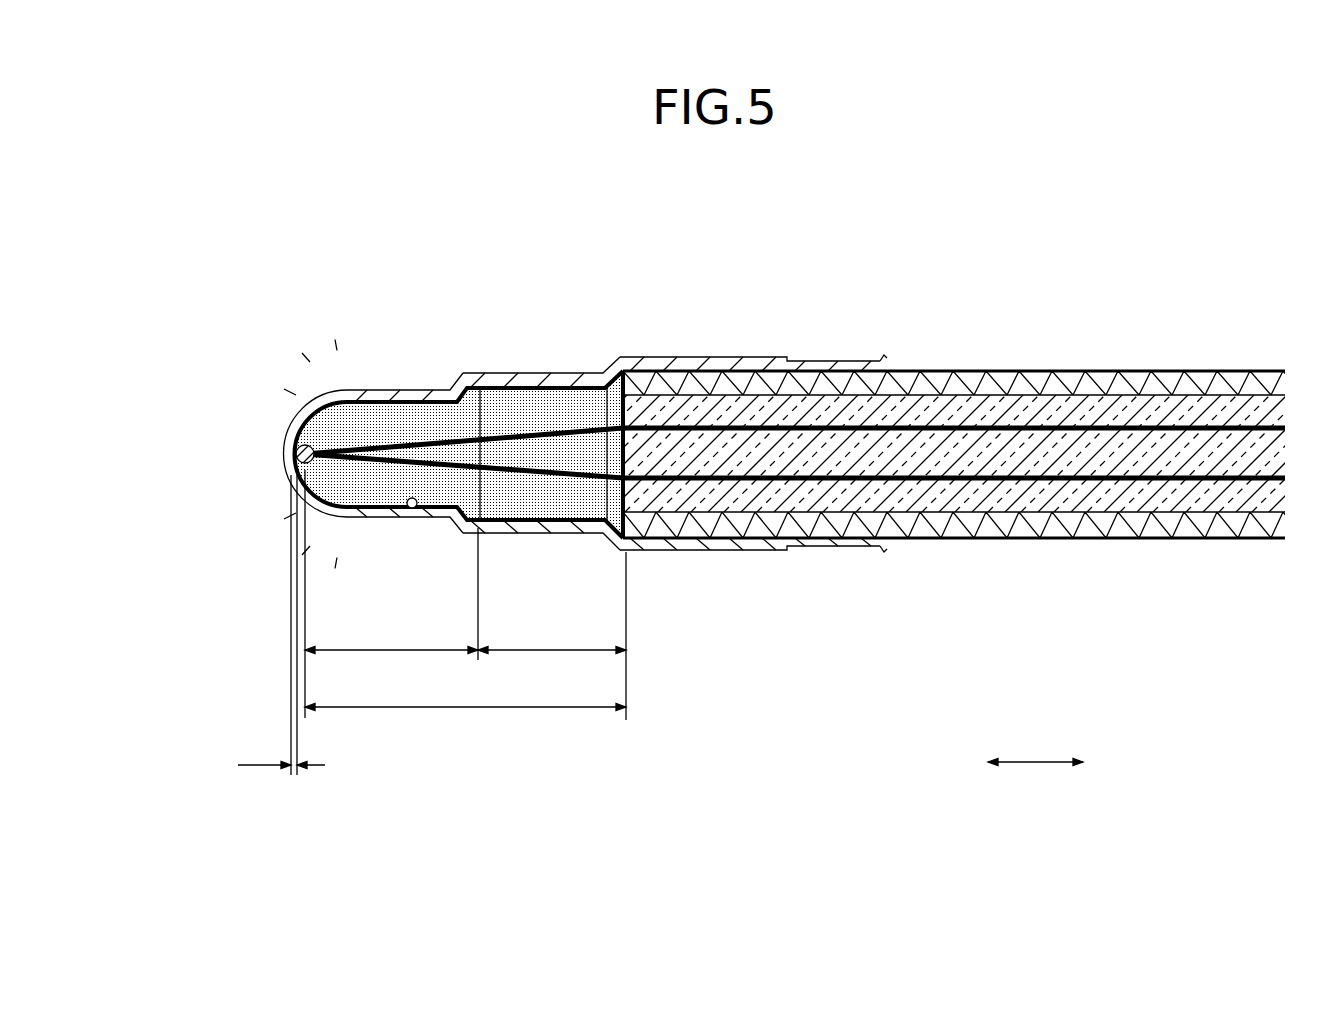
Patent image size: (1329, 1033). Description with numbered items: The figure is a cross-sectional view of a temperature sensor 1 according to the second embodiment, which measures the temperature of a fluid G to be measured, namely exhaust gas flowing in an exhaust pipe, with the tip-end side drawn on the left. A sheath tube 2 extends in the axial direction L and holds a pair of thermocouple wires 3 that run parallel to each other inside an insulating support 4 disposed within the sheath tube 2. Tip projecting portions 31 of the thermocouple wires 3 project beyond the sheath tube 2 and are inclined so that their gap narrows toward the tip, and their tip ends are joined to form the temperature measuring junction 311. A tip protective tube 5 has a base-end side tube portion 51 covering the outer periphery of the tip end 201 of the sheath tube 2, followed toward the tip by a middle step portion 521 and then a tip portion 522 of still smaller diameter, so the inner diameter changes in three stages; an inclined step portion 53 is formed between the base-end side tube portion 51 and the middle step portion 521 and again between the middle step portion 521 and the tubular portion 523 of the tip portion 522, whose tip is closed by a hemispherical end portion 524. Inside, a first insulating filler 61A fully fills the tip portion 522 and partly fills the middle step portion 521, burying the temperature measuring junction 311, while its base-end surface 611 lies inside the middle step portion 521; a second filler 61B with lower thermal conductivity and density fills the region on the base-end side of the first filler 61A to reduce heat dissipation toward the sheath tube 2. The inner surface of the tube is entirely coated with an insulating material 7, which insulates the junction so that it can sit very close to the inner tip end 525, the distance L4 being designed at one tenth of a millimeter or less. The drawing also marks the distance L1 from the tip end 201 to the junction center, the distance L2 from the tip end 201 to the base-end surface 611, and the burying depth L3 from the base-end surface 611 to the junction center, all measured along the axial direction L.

The temperature sensor 1 is at (1216, 632).
The sheath tube 2 is at (959, 450).
The tip end of the sheath tube 201 is at (612, 447).
The thermocouple wires 3 is at (1168, 428).
The tip projecting portions 31 is at (513, 477).
The temperature measuring junction 311 is at (297, 455).
The insulating support 4 is at (1056, 452).
The tip protective tube 5 is at (532, 369).
The base-end side tube portion 51 is at (716, 363).
The middle step portion 521 is at (562, 378).
The tip portion 522 is at (346, 382).
The tubular portion 523 is at (412, 392).
The hemispherical end portion 524 is at (302, 414).
The inner tip end 525 is at (284, 425).
The inclined step portion 53 is at (445, 385).
The base-end surface of the first filler 611 is at (493, 398).
The first insulating filler 61A is at (370, 498).
The second filler 61B is at (575, 500).
The insulating material 7 is at (415, 512).
The fluid to be measured G is at (268, 347).
The axial direction L is at (1035, 748).
The distance from sheath tube tip end to junction center L1 is at (465, 595).
The distance from sheath tube tip end to first filler base-end surface L2 is at (552, 594).
The burying depth of the temperature measuring junction L3 is at (391, 635).
The distance from junction tip end to inner tip end L4 is at (281, 625).